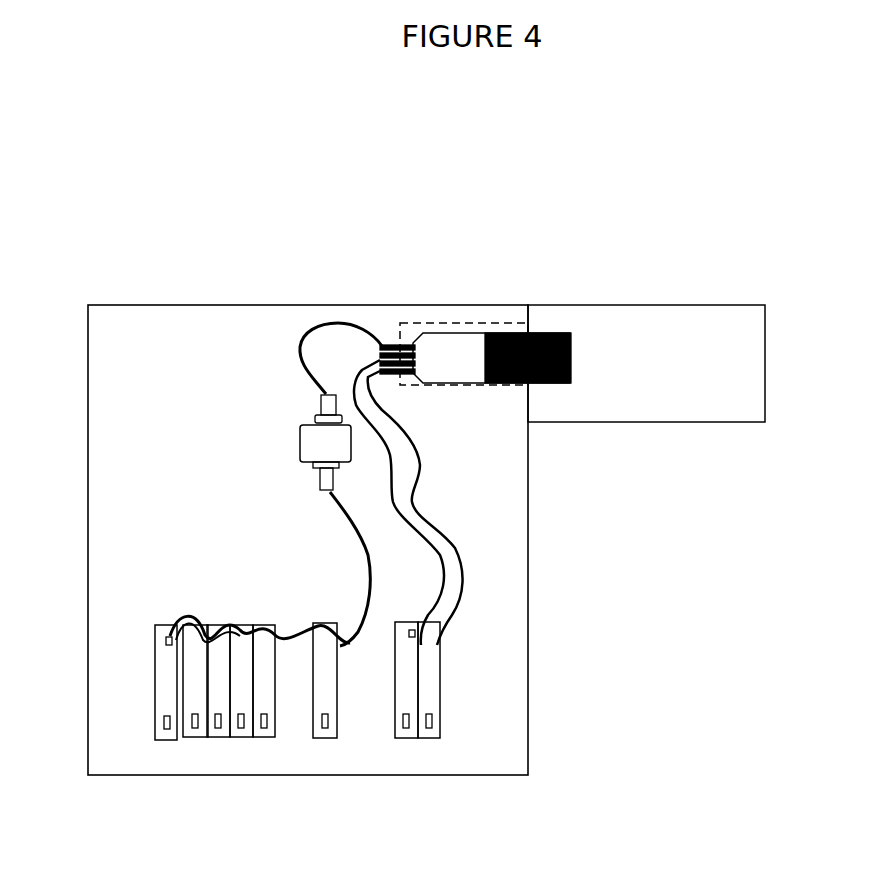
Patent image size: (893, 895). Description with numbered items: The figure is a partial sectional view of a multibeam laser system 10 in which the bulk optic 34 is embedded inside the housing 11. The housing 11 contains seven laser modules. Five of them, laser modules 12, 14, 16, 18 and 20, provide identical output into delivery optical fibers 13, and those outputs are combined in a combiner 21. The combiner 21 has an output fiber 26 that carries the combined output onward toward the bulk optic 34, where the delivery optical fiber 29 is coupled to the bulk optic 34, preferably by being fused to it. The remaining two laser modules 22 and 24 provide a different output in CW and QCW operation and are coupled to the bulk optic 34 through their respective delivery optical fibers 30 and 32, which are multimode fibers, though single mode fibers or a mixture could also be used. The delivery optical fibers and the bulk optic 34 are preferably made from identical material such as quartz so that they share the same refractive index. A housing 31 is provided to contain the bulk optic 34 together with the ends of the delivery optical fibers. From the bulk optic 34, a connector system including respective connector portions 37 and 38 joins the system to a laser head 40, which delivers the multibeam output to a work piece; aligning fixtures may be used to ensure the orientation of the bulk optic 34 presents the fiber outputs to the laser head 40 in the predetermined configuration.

The laser system 10 is at (40, 446).
The housing 11 is at (172, 305).
The laser module 12 is at (167, 745).
The delivery optical fibers 13 is at (250, 553).
The laser module 14 is at (196, 745).
The laser module 16 is at (218, 745).
The laser module 18 is at (243, 745).
The laser module 20 is at (266, 745).
The combiner 21 is at (320, 745).
The laser module 22 is at (409, 745).
The laser module 24 is at (432, 745).
The output fiber 26 is at (372, 552).
The delivery optical fiber 29 is at (338, 323).
The delivery optical fiber 30 is at (445, 522).
The housing 31 is at (457, 387).
The delivery optical fiber 32 is at (390, 508).
The bulk optic 34 is at (447, 330).
The connector portion 37 is at (507, 333).
The connector portion 38 is at (548, 333).
The laser head 40 is at (683, 422).